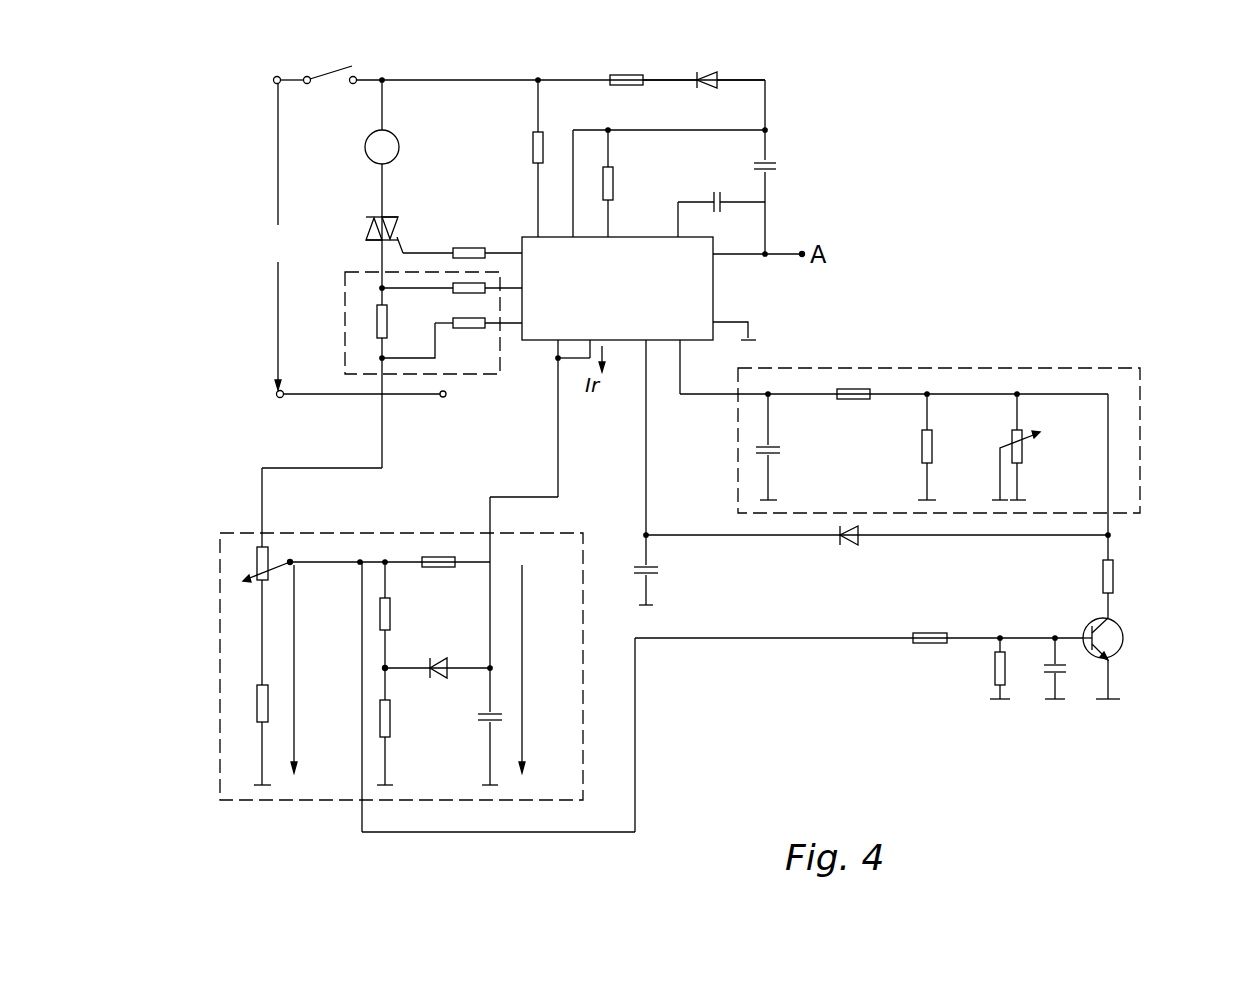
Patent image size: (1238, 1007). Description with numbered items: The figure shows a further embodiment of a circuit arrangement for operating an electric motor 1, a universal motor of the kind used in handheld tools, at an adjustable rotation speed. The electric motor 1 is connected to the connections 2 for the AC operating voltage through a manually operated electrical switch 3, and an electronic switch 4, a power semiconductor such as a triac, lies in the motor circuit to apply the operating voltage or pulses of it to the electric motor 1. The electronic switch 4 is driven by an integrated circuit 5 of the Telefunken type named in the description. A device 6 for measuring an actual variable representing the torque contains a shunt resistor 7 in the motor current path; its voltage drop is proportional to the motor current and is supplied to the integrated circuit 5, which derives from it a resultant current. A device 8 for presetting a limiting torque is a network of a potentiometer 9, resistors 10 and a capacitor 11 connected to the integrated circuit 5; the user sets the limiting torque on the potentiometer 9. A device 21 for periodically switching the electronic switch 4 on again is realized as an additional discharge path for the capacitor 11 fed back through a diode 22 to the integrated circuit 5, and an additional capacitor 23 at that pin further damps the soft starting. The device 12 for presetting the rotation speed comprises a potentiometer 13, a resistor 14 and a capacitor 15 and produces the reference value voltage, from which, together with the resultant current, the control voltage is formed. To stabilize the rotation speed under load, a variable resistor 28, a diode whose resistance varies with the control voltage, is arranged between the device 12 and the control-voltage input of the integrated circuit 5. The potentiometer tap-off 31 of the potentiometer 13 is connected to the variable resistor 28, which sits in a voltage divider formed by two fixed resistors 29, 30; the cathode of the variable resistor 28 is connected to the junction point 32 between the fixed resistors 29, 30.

The electric motor 1 is at (397, 145).
The connections for the operating voltage 2 is at (272, 78).
The electrical switch 3 is at (334, 72).
The electronic switch 4 is at (398, 223).
The integrated circuit 5 is at (700, 289).
The device for measuring an actual variable 6 is at (416, 305).
The resistor 7 is at (382, 312).
The device for presetting a reference variable 8 is at (980, 413).
The potentiometer 9 is at (1017, 430).
The resistors 10 is at (925, 430).
The capacitor 11 is at (776, 442).
The device for presetting the rotation speed 12 is at (363, 674).
The potentiometer 13 is at (257, 562).
The resistor 14 is at (435, 557).
The capacitor 15 is at (492, 722).
The device for periodically switching the electronic switch on again 21 is at (960, 537).
The diode 22 is at (845, 547).
The capacitor 23 is at (652, 576).
The variable resistor 28 is at (440, 678).
The fixed resistor 29 is at (380, 612).
The fixed resistor 30 is at (388, 720).
The potentiometer tap-off 31 is at (275, 556).
The junction point 32 is at (384, 670).